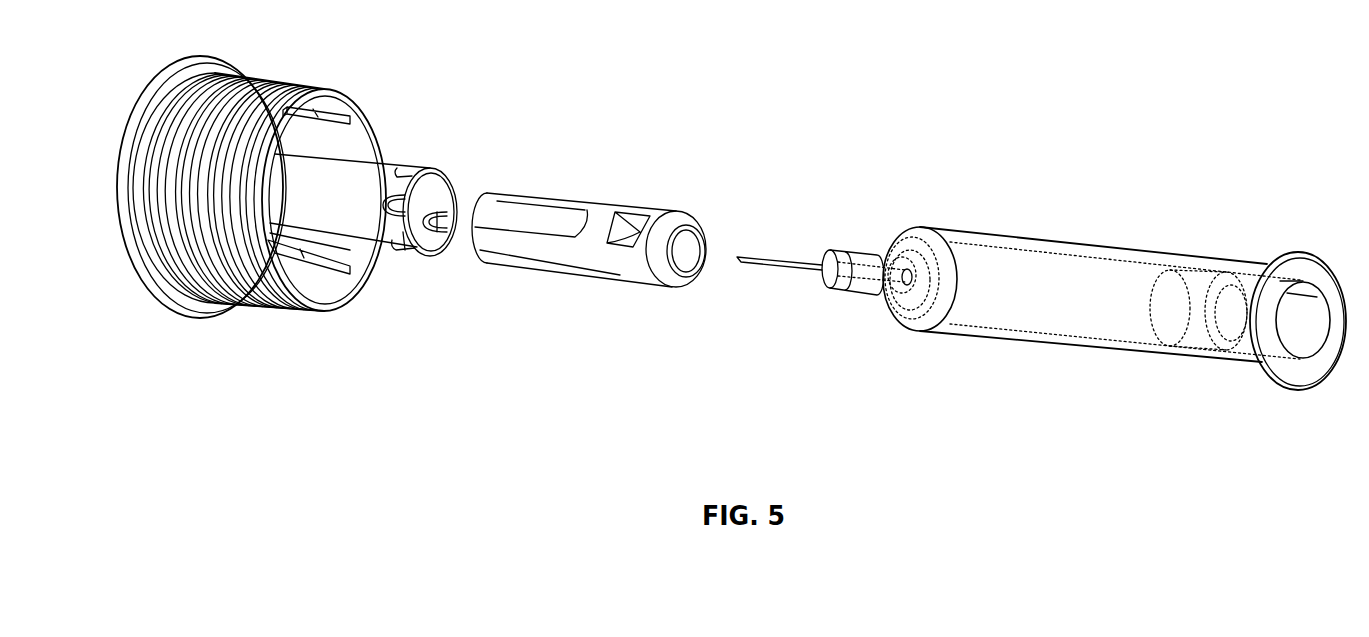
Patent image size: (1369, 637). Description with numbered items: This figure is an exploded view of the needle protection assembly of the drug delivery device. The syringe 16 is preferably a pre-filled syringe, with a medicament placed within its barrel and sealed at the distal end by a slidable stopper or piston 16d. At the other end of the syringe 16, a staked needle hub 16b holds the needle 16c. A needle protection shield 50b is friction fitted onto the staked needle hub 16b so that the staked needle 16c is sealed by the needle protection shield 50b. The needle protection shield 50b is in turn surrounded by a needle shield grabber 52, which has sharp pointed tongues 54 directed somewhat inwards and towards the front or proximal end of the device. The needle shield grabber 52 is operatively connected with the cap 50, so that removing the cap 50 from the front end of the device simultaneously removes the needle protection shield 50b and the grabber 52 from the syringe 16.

The syringe 16 is at (1070, 348).
The staked needle hub 16b is at (855, 296).
The needle 16c is at (782, 268).
The slidable stopper or piston 16d is at (1196, 287).
The cap 50 is at (247, 303).
The needle protection shield 50b is at (577, 203).
The needle shield grabber 52 is at (367, 188).
The sharp pointed tongues 54 is at (413, 243).